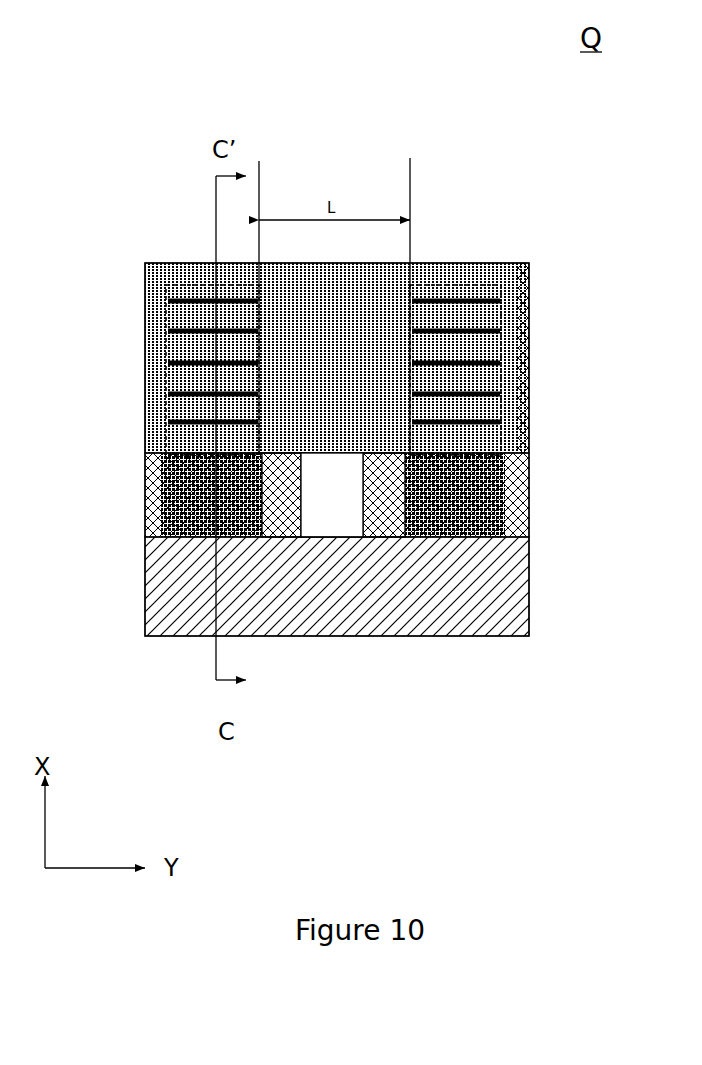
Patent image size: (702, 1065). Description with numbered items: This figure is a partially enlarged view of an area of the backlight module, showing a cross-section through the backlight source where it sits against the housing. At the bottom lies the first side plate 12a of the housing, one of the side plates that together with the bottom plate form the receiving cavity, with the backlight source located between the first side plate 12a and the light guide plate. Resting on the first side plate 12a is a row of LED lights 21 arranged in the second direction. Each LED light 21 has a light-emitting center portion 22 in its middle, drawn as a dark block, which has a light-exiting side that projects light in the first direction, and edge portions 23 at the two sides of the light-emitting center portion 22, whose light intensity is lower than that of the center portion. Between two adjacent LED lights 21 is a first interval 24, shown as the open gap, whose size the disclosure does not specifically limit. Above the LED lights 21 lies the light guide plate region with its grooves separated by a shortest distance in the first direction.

The first side plate 12a is at (167, 583).
The LED light 21 is at (337, 625).
The light-emitting center portion 22 is at (445, 505).
The edge portion 23 is at (383, 510).
The first interval 24 is at (330, 505).